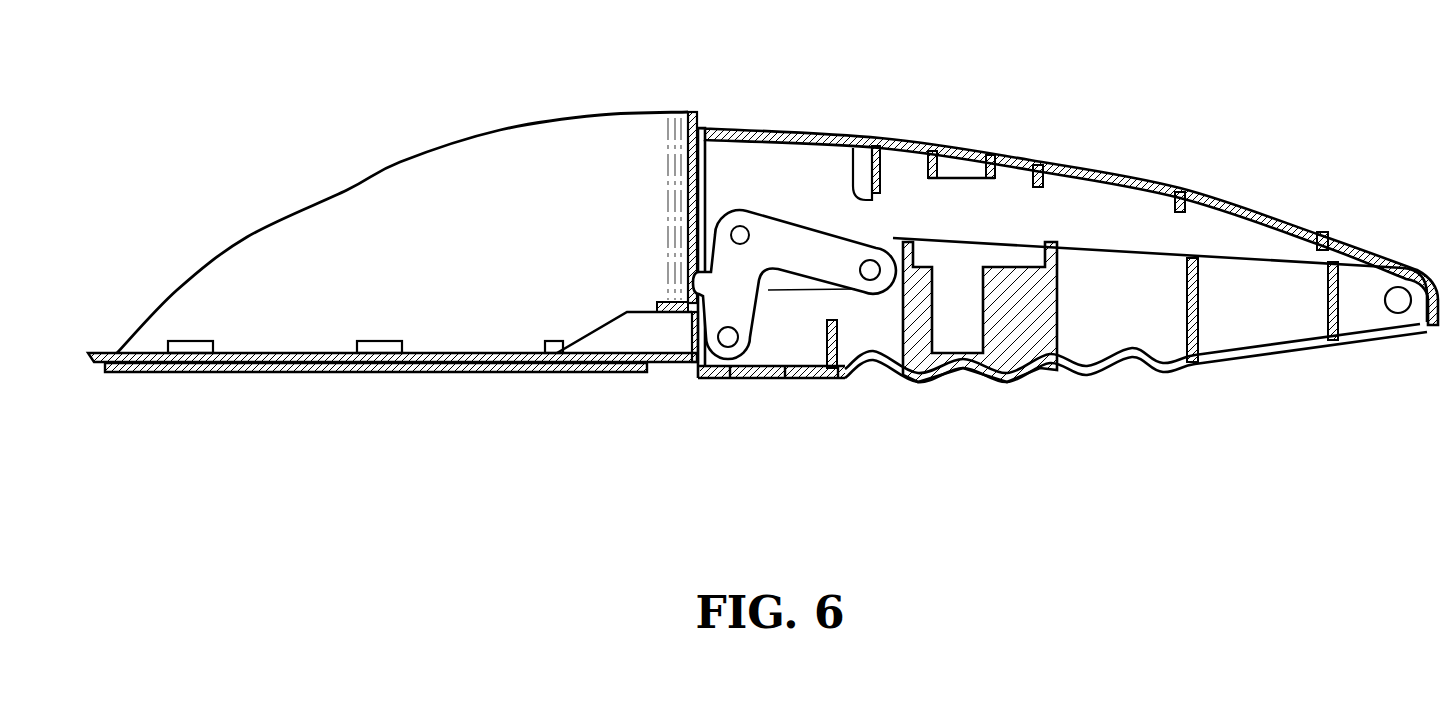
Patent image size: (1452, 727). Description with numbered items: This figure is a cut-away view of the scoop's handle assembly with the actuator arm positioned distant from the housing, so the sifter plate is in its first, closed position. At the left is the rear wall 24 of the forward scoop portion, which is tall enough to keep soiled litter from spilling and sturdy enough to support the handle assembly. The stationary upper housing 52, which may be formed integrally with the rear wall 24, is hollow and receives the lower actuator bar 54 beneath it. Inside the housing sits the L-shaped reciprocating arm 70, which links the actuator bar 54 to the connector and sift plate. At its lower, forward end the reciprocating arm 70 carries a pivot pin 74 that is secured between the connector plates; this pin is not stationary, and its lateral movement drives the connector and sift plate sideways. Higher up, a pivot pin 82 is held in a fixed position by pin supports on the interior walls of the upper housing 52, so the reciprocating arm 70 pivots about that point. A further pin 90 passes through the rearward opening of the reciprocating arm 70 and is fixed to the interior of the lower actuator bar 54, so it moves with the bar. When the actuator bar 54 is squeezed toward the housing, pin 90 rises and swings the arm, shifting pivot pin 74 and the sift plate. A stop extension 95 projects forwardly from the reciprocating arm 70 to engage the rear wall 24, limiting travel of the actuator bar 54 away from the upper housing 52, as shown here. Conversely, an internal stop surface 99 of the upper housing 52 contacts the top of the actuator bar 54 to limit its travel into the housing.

The rear wall 24 is at (698, 123).
The upper housing 52 is at (1077, 207).
The lower actuator bar 54 is at (1282, 330).
The reciprocating arm 70 is at (740, 275).
The pivot pin 74 is at (728, 340).
The pivot pin 82 is at (741, 226).
The pin 90 is at (872, 260).
The stop extension 95 is at (683, 303).
The internal stop surface 99 is at (853, 148).